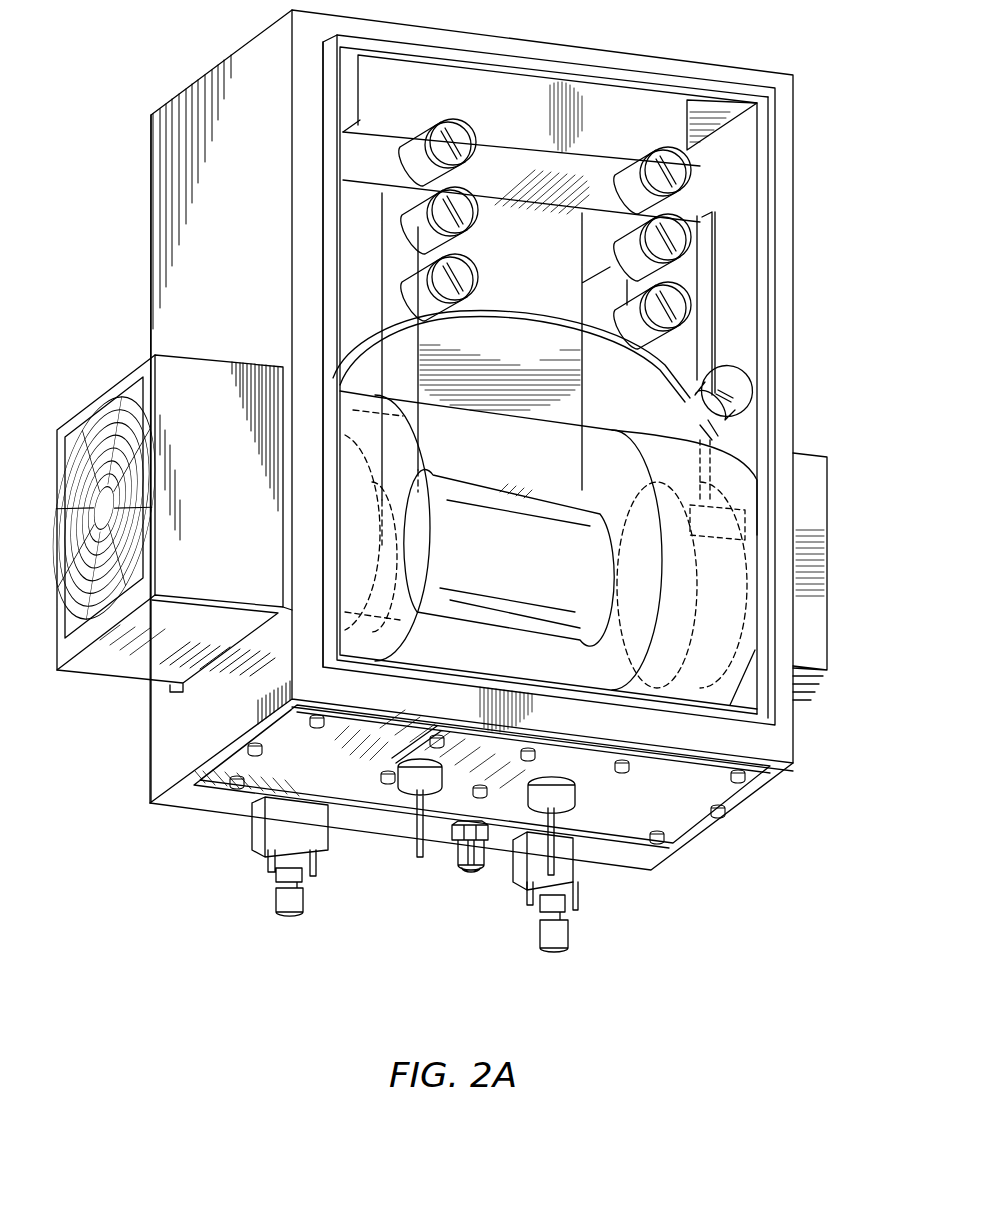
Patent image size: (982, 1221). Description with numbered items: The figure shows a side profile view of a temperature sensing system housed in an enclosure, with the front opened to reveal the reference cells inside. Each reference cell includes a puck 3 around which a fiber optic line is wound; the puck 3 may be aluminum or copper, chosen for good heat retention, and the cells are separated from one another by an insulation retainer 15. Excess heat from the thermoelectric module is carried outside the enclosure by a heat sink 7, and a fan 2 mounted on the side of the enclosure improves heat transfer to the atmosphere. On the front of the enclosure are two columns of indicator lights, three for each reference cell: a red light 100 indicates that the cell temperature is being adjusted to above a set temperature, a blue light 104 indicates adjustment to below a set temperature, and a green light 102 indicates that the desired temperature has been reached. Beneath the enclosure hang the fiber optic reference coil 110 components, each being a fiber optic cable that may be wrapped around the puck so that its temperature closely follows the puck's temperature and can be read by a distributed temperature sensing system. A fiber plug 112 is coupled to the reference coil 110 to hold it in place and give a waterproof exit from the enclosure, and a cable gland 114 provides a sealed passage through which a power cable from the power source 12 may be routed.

The fan 2 is at (80, 424).
The puck 3 is at (726, 614).
The heat sink 7 is at (818, 492).
The power source 12 is at (515, 365).
The insulation retainer 15 is at (476, 488).
The red light 100 is at (469, 135).
The green light 102 is at (471, 212).
The blue light 104 is at (471, 279).
The fiber optic reference coil 110 is at (620, 889).
The fiber plug 112 is at (577, 796).
The cable gland 114 is at (480, 880).